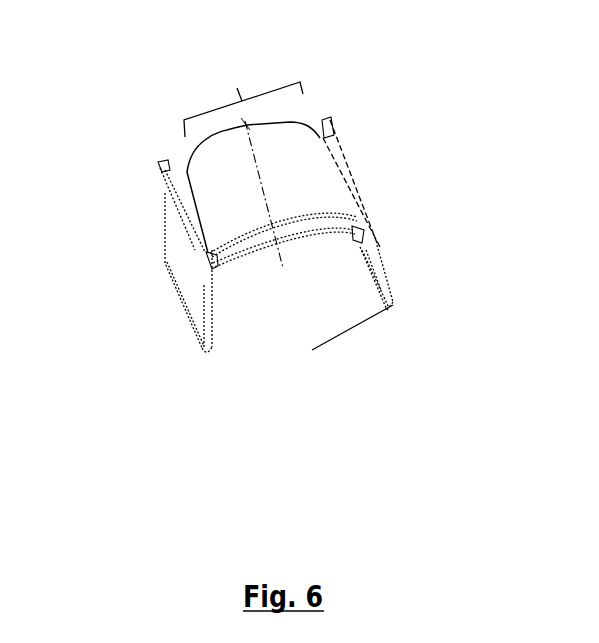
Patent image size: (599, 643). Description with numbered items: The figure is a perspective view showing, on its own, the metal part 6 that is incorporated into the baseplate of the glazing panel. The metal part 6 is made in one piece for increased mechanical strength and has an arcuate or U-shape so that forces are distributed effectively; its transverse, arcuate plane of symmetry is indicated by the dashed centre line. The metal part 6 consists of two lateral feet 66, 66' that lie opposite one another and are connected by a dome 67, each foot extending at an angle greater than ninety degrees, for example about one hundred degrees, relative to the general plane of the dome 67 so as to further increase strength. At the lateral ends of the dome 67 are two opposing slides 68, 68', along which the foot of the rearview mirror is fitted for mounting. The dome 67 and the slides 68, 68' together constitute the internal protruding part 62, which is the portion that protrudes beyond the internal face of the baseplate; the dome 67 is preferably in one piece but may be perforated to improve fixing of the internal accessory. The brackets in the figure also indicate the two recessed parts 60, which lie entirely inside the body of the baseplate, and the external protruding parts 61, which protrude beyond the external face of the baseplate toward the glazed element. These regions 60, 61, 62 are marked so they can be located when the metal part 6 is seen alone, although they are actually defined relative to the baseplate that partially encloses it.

The metal part 6 is at (131, 117).
The recessed part 60 is at (259, 260).
The external protruding part 61 is at (215, 345).
The internal protruding part 62 is at (243, 98).
The lateral foot 66 is at (178, 312).
The lateral foot 66' is at (422, 305).
The dome 67 is at (255, 247).
The slide 68 is at (153, 120).
The slide 68' is at (370, 79).